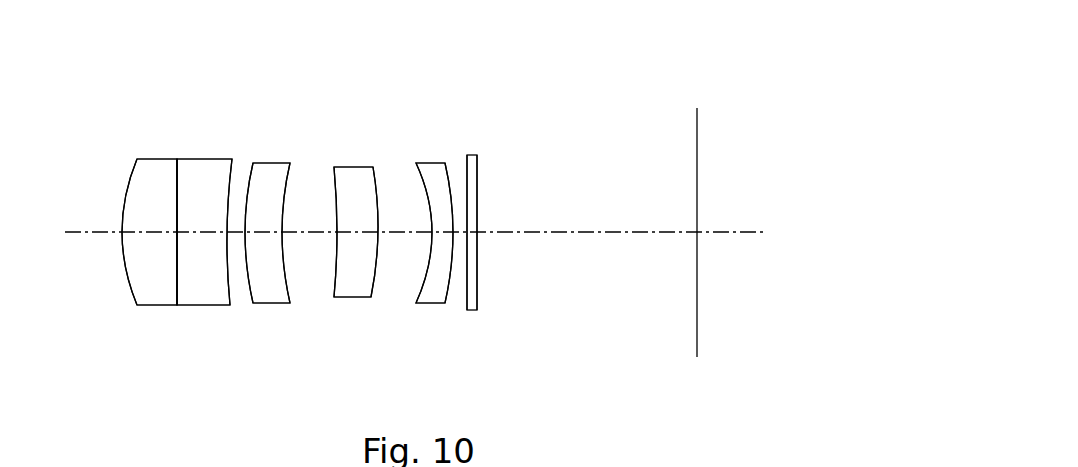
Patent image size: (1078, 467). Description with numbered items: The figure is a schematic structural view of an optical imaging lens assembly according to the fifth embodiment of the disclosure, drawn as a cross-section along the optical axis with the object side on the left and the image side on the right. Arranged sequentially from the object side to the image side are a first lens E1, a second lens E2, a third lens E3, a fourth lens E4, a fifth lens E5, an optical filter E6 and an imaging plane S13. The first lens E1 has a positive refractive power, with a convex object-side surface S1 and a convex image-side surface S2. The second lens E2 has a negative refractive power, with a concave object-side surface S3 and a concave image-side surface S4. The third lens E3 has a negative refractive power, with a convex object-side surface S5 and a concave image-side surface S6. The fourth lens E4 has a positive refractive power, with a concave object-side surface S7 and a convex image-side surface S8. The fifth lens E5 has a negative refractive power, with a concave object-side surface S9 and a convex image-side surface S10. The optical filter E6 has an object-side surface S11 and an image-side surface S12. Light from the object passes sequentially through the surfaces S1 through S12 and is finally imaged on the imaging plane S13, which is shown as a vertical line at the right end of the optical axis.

The first lens E1 is at (155, 159).
The second lens E2 is at (205, 159).
The third lens E3 is at (272, 163).
The fourth lens E4 is at (352, 167).
The fifth lens E5 is at (428, 163).
The optical filter E6 is at (473, 155).
The object-side surface of first lens S1 is at (122, 232).
The image-side surface of first lens S2 is at (177, 232).
The object-side surface of second lens S3 is at (177, 232).
The image-side surface of second lens S4 is at (227, 232).
The object-side surface of third lens S5 is at (245, 232).
The image-side surface of third lens S6 is at (282, 232).
The object-side surface of fourth lens S7 is at (337, 232).
The image-side surface of fourth lens S8 is at (378, 232).
The object-side surface of fifth lens S9 is at (432, 232).
The image-side surface of fifth lens S10 is at (453, 232).
The object-side surface of optical filter S11 is at (467, 232).
The image-side surface of optical filter S12 is at (477, 232).
The imaging plane S13 is at (697, 233).